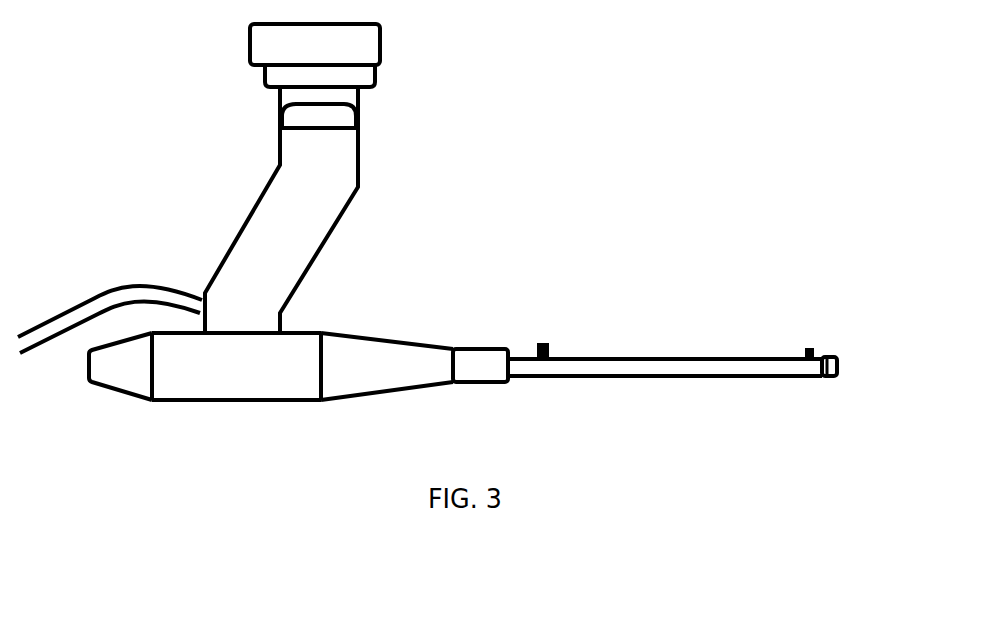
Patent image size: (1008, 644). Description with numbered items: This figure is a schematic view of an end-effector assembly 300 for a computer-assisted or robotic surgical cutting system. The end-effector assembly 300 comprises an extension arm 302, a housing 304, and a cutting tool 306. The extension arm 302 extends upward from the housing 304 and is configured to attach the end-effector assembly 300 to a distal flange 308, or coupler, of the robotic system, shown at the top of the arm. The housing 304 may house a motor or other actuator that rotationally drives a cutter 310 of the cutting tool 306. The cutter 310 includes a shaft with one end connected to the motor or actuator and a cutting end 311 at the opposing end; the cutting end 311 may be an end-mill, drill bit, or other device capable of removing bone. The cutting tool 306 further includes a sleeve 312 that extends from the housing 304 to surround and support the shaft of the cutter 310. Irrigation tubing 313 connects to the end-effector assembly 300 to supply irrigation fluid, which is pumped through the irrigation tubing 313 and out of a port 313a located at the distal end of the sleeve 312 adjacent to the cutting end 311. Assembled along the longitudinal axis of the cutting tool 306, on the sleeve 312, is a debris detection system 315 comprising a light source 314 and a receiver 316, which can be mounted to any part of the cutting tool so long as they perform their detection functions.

The end-effector assembly 300 is at (144, 78).
The extension arm 302 is at (340, 218).
The housing 304 is at (222, 402).
The cutting tool 306 is at (363, 447).
The distal flange 308 is at (383, 33).
The cutter 310 is at (851, 387).
The cutting end 311 is at (828, 377).
The sleeve 312 is at (650, 377).
The irrigation tubing 313 is at (96, 293).
The port 313a is at (813, 357).
The light source 314 is at (547, 343).
The debris detection system 315 is at (661, 291).
The receiver 316 is at (812, 348).